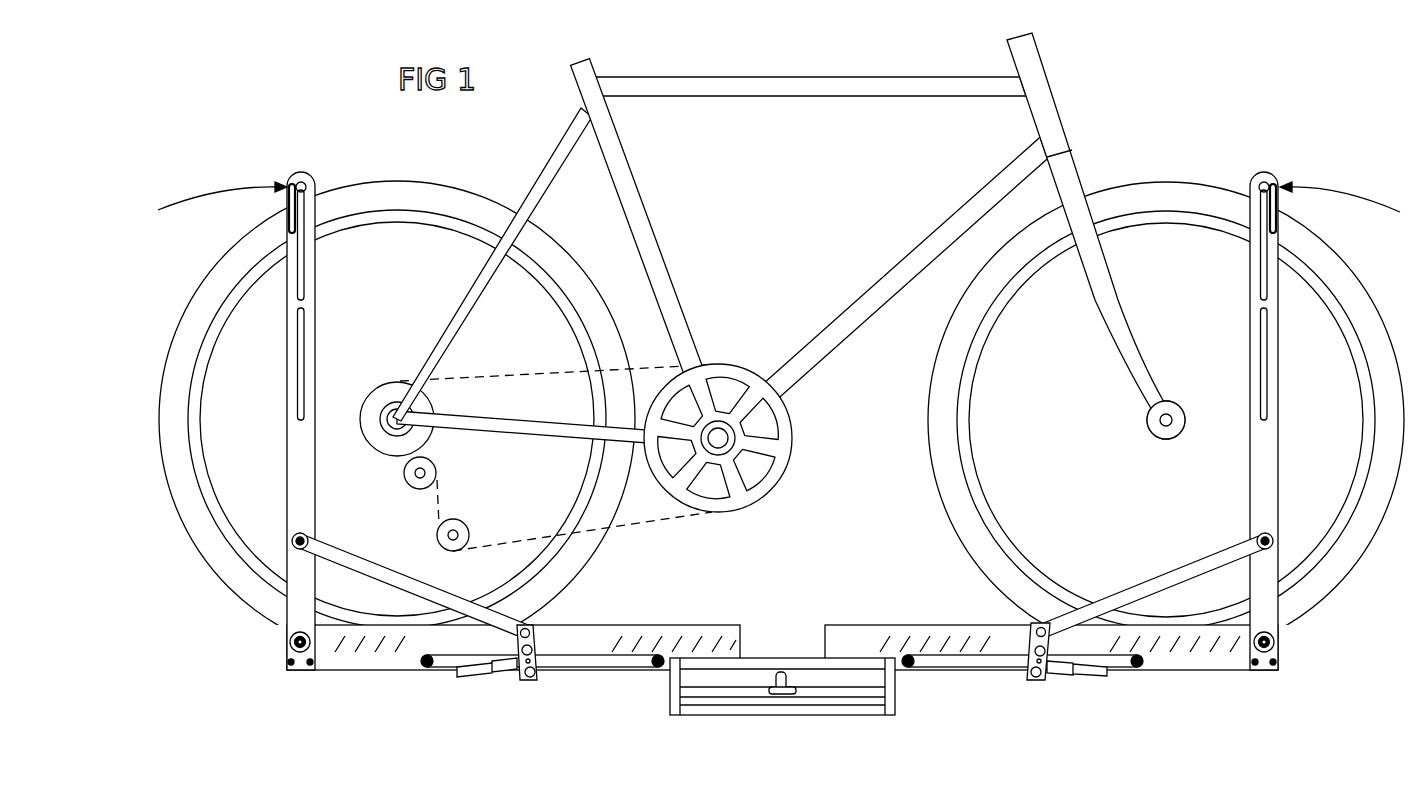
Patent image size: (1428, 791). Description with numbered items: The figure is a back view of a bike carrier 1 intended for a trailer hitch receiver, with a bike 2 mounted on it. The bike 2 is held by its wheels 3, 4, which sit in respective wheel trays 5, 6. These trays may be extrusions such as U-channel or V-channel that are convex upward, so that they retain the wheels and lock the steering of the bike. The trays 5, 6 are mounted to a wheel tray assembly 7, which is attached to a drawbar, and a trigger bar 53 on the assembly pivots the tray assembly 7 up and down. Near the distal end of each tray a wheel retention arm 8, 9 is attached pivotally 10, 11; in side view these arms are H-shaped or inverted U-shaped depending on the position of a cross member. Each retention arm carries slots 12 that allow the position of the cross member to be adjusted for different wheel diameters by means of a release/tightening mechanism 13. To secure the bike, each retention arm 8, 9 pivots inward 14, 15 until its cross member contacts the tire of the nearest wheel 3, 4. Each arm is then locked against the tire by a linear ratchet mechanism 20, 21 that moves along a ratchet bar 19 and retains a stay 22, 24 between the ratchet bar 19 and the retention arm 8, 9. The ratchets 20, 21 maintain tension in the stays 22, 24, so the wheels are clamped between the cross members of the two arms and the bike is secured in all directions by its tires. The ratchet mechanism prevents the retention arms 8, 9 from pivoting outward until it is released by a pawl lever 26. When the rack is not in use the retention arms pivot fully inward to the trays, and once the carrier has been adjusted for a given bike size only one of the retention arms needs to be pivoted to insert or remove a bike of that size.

The bike carrier 1 is at (779, 463).
The bike 2 is at (781, 380).
The wheel 3 is at (405, 193).
The wheel 4 is at (1160, 193).
The wheel tray 5 is at (389, 672).
The wheel tray 6 is at (1178, 672).
The wheel tray assembly 7 is at (817, 706).
The wheel retention arm 8 is at (300, 458).
The wheel retention arm 9 is at (1268, 454).
The pivotal attachment 10 is at (290, 644).
The pivotal attachment 11 is at (1279, 648).
The slot 12 is at (300, 353).
The release/tightening mechanism 13 is at (295, 218).
The inward pivoting direction 14 is at (219, 200).
The inward pivoting direction 15 is at (1347, 203).
The ratchet bar 19 is at (637, 660).
The linear ratchet mechanism 20 is at (528, 698).
The linear ratchet mechanism 21 is at (1039, 698).
The stay 22 is at (370, 571).
The stay 24 is at (1178, 572).
The pawl lever 26 is at (470, 678).
The trigger bar 53 is at (782, 694).